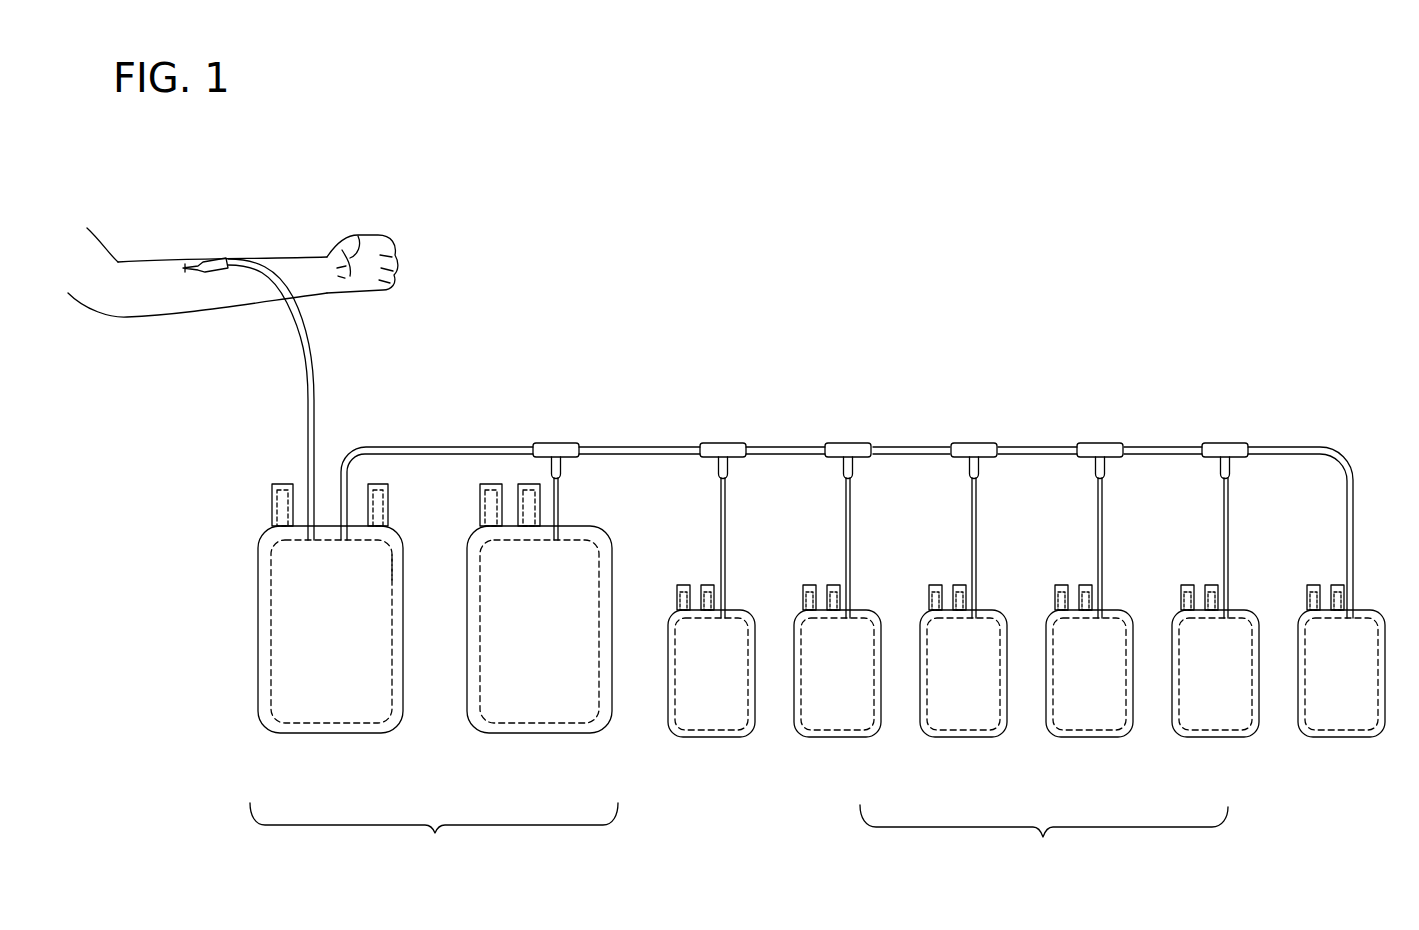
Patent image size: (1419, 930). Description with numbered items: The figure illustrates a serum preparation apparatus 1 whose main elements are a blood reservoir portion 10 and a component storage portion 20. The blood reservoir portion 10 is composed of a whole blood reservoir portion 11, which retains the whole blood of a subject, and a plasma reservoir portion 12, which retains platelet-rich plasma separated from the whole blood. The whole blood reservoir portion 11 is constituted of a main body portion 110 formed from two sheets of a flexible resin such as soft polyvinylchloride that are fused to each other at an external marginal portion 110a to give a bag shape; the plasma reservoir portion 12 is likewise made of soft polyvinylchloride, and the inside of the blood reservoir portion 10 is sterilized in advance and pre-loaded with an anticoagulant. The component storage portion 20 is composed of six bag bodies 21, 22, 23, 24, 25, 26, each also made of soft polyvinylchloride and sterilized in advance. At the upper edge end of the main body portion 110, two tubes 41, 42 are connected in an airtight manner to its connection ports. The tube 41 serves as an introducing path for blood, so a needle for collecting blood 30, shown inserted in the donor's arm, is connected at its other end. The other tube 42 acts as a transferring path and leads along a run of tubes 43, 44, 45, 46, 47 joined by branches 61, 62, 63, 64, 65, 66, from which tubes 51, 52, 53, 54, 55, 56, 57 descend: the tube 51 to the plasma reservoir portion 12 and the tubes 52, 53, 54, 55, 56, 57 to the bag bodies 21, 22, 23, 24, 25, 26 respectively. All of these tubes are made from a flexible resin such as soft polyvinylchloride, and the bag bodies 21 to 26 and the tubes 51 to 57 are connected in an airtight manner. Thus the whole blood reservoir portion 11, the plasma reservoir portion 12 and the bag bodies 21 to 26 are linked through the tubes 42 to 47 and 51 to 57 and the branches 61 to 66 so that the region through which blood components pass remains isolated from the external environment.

The serum preparation apparatus 1 is at (772, 534).
The blood reservoir portion 10 is at (454, 666).
The whole blood reservoir portion 11 is at (364, 596).
The main body portion 110 is at (375, 602).
The external marginal portion 110a is at (395, 567).
The plasma reservoir portion 12 is at (602, 538).
The component storage portion 20 is at (1026, 726).
The bag body 21 is at (722, 737).
The bag body 22 is at (832, 737).
The bag body 23 is at (957, 737).
The bag body 24 is at (1092, 736).
The bag body 25 is at (1212, 736).
The bag body 26 is at (1335, 736).
The needle for collecting blood 30 is at (213, 262).
The tube 41 is at (310, 358).
The tube 42 is at (420, 445).
The tube 43 is at (643, 446).
The tube 44 is at (780, 446).
The tube 45 is at (906, 446).
The tube 46 is at (1032, 446).
The tube 47 is at (1158, 446).
The tube 51 is at (559, 496).
The tube 52 is at (726, 514).
The tube 53 is at (851, 514).
The tube 54 is at (977, 514).
The tube 55 is at (1103, 514).
The tube 56 is at (1229, 514).
The tube 57 is at (1346, 546).
The branch 61 is at (553, 443).
The branch 62 is at (720, 443).
The branch 63 is at (845, 443).
The branch 64 is at (971, 443).
The branch 65 is at (1097, 443).
The branch 66 is at (1222, 443).